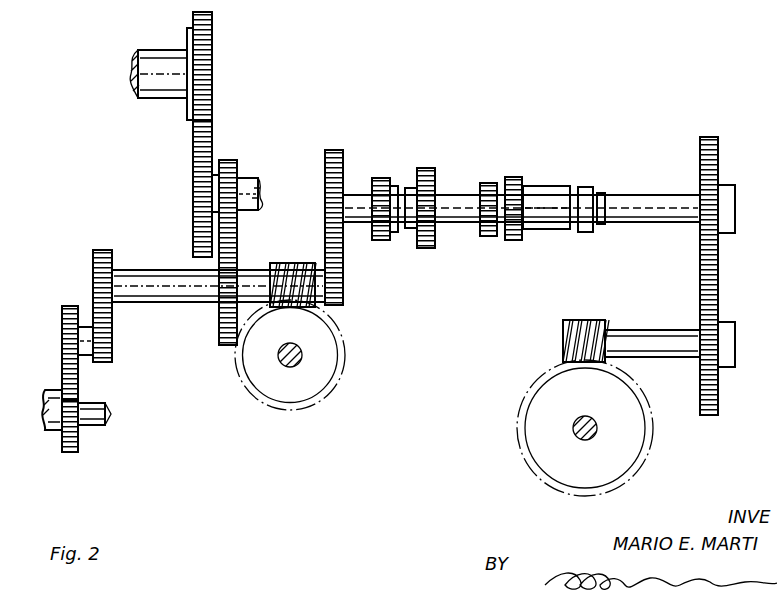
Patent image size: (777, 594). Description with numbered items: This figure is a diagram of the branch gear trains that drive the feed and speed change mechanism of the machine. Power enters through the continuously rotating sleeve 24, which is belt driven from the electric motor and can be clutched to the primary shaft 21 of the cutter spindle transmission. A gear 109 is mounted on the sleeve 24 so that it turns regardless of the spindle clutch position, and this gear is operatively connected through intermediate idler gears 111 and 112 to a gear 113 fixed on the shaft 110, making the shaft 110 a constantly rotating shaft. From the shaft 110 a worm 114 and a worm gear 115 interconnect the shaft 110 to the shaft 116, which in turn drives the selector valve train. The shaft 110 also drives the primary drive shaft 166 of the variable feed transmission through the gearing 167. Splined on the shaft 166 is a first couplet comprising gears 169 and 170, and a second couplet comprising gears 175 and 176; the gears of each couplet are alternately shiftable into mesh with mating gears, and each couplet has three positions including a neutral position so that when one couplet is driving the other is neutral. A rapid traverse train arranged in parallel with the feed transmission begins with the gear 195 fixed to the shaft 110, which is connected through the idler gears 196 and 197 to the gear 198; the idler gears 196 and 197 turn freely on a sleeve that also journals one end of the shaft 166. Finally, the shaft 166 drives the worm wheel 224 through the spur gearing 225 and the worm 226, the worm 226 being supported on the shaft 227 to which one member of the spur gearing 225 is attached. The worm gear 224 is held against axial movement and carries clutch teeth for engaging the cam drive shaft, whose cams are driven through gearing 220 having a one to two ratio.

The gear 198 is at (213, 63).
The idler gear 197 is at (200, 184).
The idler gear 196 is at (228, 160).
The gear 195 is at (228, 346).
The gear 113 is at (103, 250).
The idler gear 112 is at (104, 363).
The idler gear 111 is at (62, 313).
The gear 109 is at (78, 448).
The shaft 110 is at (155, 302).
The worm 114 is at (294, 263).
The gearing 167 is at (344, 283).
The primary drive shaft 166 is at (350, 194).
The gear 169 is at (380, 178).
The gear 170 is at (430, 168).
The gear 175 is at (490, 183).
The gear 176 is at (515, 177).
The spur gearing 225 is at (718, 271).
The shaft 227 is at (672, 330).
The worm 226 is at (600, 320).
The worm gear 224 is at (538, 394).
The gearing 220 is at (573, 428).
The worm gear 115 is at (345, 352).
The shaft 116 is at (300, 366).
The primary shaft 21 is at (111, 412).
The sleeve 24 is at (58, 420).